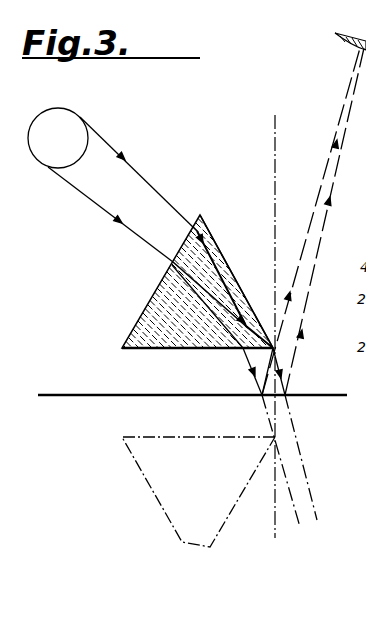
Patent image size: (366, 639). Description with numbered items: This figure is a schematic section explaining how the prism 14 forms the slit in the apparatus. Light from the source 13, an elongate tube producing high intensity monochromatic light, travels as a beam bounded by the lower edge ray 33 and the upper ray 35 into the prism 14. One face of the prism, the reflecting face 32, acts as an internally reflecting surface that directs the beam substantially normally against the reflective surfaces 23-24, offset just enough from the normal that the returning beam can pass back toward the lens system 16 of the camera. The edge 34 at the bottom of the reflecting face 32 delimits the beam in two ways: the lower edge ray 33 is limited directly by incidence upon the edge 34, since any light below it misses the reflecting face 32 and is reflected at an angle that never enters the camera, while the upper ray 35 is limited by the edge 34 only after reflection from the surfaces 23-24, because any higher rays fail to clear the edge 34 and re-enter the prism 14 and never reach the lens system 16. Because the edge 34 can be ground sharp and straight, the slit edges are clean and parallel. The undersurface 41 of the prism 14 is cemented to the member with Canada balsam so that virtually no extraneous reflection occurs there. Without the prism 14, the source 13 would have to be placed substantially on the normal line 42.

The source of light 13 is at (40, 122).
The prism 14 is at (160, 298).
The lens system 16 is at (342, 40).
The reflective surfaces 23-24 is at (210, 396).
The reflecting face 32 is at (207, 223).
The lower edge ray 33 is at (107, 213).
The edge 34 is at (276, 348).
The upper ray 35 is at (132, 167).
The undersurface 41 is at (190, 349).
The normal line 42 is at (275, 155).